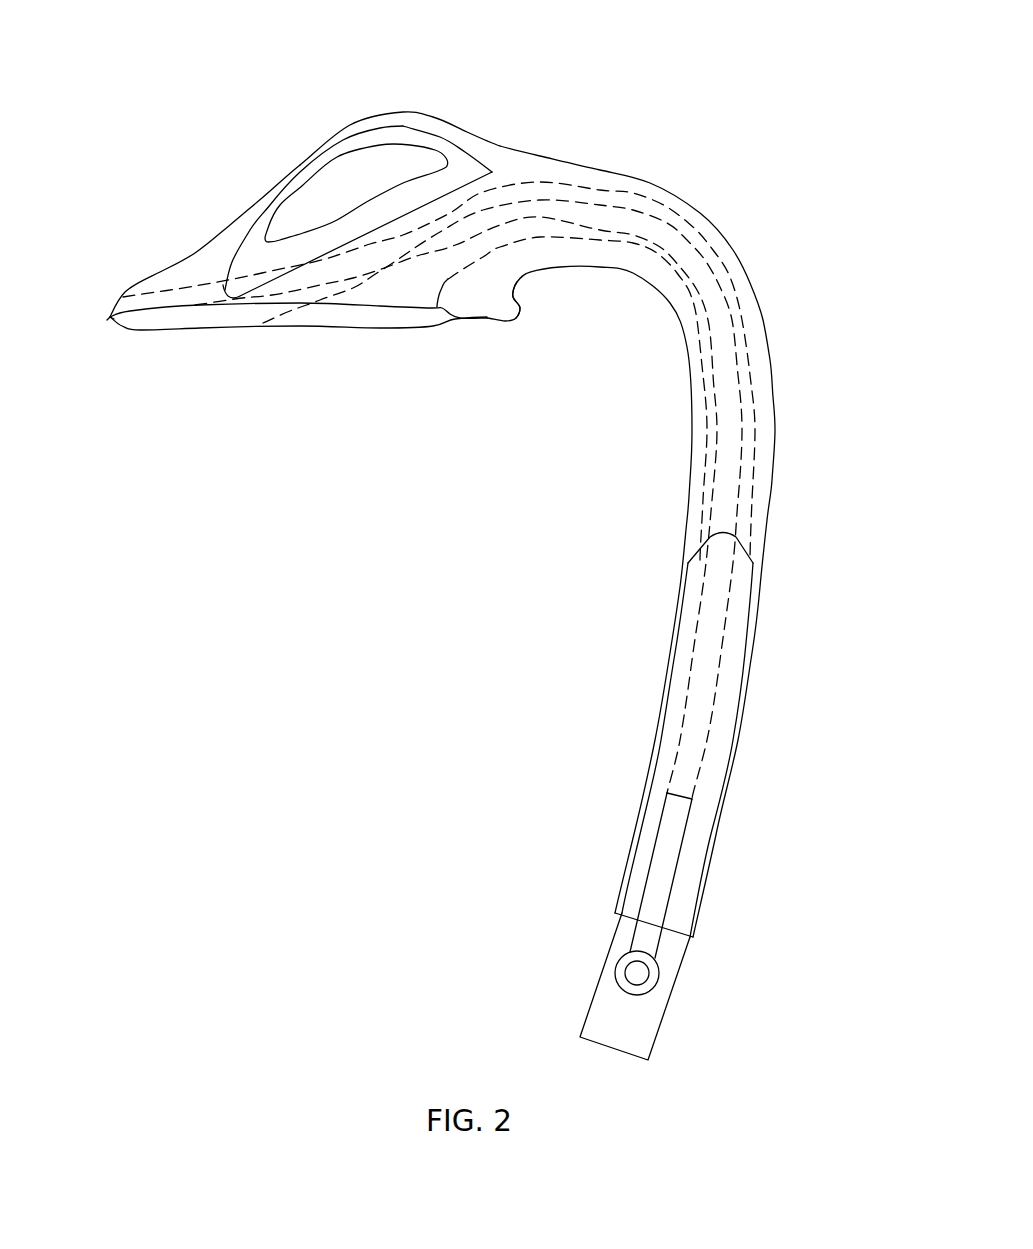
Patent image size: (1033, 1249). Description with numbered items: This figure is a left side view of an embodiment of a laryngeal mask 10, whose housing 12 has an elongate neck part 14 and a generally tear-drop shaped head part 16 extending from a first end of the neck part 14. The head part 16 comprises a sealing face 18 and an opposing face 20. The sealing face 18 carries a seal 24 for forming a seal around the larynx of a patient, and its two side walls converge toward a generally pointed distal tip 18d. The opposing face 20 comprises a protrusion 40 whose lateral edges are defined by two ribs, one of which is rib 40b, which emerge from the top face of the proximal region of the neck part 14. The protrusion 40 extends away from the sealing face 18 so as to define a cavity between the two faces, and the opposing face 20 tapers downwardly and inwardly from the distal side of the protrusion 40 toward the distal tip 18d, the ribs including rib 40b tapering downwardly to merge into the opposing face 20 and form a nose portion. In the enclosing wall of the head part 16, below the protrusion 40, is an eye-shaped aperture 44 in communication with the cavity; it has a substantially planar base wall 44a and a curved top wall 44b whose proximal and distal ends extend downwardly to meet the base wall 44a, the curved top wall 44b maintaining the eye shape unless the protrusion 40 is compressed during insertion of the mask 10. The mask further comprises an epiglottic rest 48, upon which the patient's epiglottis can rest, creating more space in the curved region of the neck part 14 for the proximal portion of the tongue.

The laryngeal mask 10 is at (668, 92).
The housing 12 is at (710, 216).
The neck part 14 is at (768, 585).
The head part 16 is at (190, 152).
The sealing face 18 is at (153, 336).
The distal tip 18d is at (107, 320).
The opposing face 20 is at (190, 255).
The seal 24 is at (227, 333).
The protrusion 40 is at (413, 117).
The rib 40b is at (340, 127).
The aperture 44 is at (323, 188).
The base wall 44a is at (372, 232).
The top wall 44b is at (437, 150).
The epiglottic rest 48 is at (522, 317).